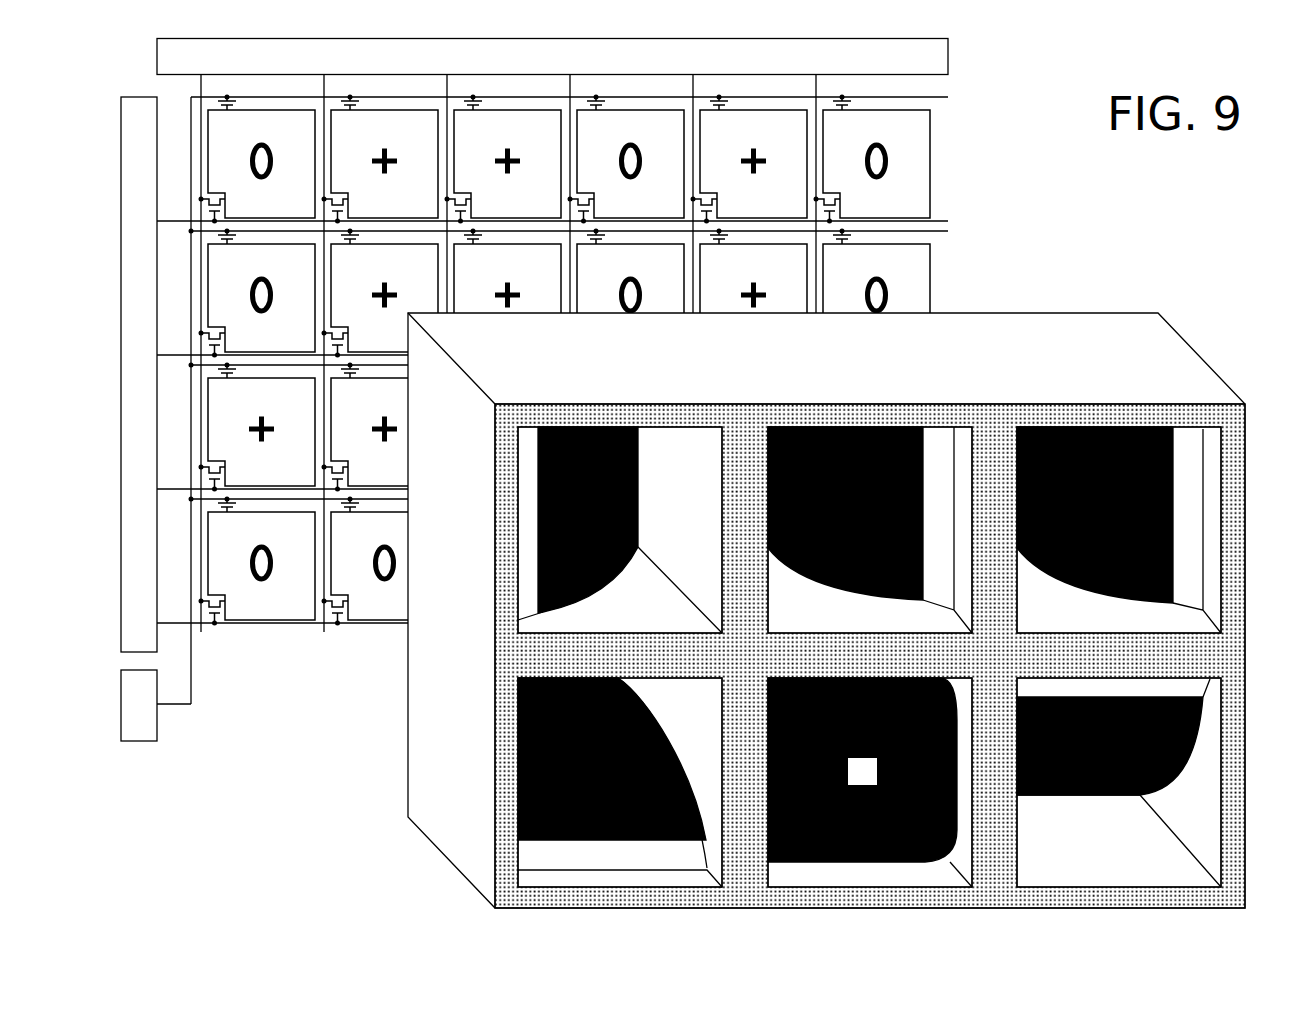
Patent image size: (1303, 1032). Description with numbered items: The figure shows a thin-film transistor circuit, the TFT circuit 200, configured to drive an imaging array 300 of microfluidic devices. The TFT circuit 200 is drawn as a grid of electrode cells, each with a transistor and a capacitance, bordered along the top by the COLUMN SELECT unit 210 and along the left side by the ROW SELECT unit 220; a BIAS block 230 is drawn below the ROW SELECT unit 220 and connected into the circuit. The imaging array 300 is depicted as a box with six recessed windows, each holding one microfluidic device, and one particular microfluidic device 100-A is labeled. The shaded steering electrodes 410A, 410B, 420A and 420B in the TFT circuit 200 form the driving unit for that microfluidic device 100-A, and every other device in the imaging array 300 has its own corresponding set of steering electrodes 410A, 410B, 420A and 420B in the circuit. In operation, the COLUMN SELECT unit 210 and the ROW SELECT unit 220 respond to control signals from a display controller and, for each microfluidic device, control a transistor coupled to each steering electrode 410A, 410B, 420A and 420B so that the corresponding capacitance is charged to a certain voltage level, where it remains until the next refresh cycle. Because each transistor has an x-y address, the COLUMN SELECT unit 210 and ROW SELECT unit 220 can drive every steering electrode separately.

The TFT circuit 200 is at (605, 389).
The COLUMN SELECT unit 210 is at (948, 60).
The ROW SELECT unit 220 is at (144, 97).
The bias circuit 230 is at (135, 741).
The imaging array 300 is at (826, 590).
The steering electrode 410A is at (257, 159).
The steering electrode 420A is at (380, 159).
The steering electrode 410B is at (257, 293).
The steering electrode 420B is at (380, 293).
The microfluidic device 100-A is at (620, 530).